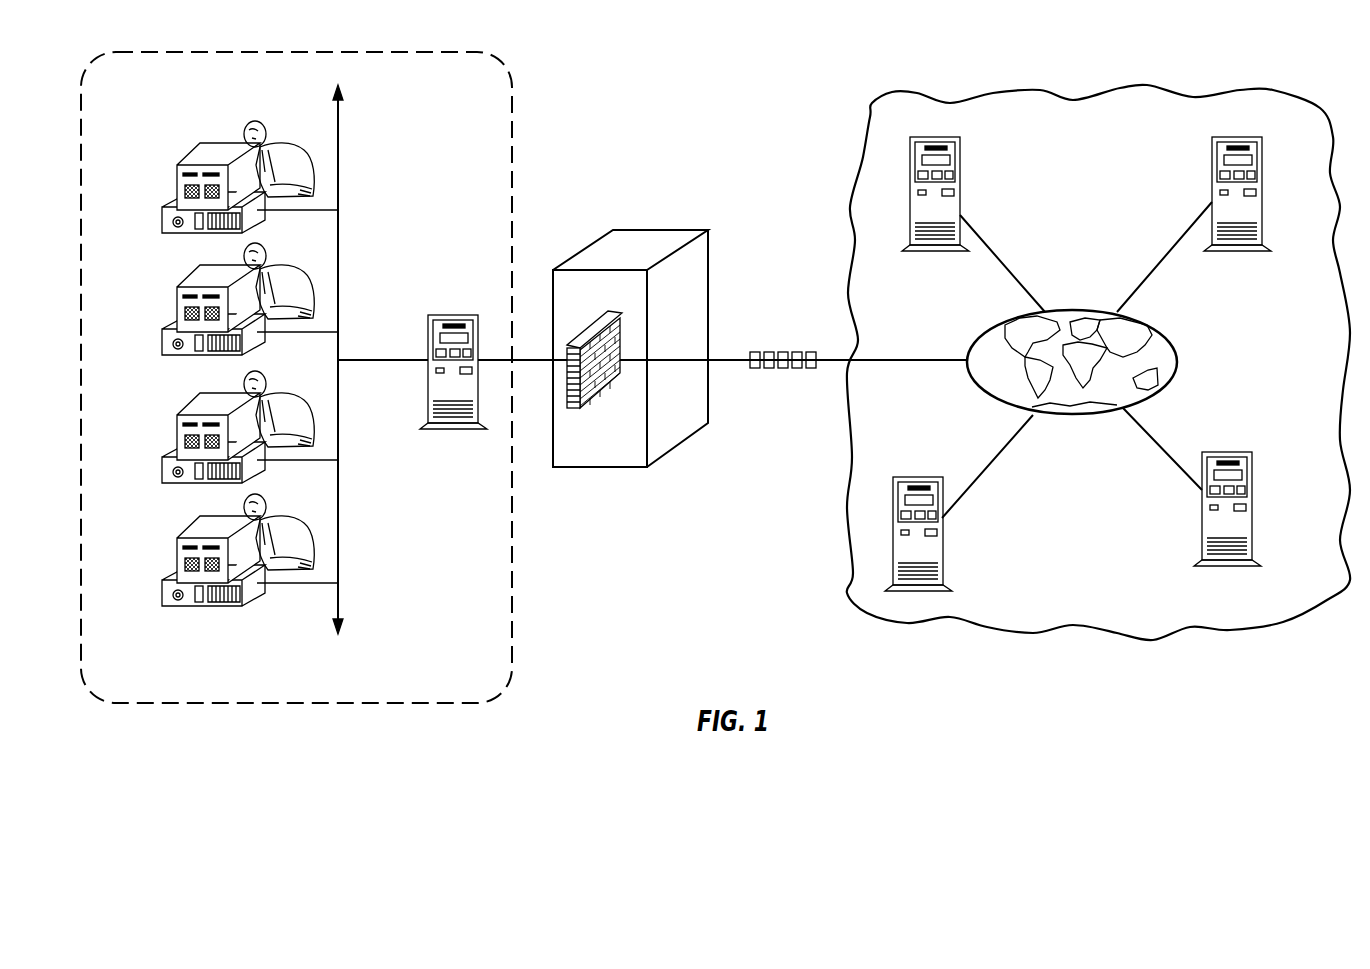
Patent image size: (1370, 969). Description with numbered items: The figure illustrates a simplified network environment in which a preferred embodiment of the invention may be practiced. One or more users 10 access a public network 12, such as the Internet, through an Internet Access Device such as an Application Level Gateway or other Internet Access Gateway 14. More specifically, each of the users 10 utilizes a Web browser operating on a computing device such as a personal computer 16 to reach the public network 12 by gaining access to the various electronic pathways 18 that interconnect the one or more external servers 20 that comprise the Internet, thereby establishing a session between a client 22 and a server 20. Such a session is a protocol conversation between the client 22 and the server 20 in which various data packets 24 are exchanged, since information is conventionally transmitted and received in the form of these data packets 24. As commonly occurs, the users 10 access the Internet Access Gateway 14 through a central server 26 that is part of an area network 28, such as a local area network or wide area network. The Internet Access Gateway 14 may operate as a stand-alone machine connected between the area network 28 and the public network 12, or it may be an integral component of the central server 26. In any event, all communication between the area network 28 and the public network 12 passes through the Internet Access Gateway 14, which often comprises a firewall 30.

The users 10 is at (279, 407).
The public network 12 is at (1255, 87).
The Internet Access Gateway 14 is at (637, 230).
The personal computer 16 is at (252, 643).
The electronic pathways 18 is at (1067, 311).
The external servers 20 is at (960, 165).
The client 22 is at (200, 407).
The data packets 24 is at (818, 374).
The central server 26 is at (442, 428).
The area network 28 is at (512, 643).
The firewall 30 is at (595, 393).